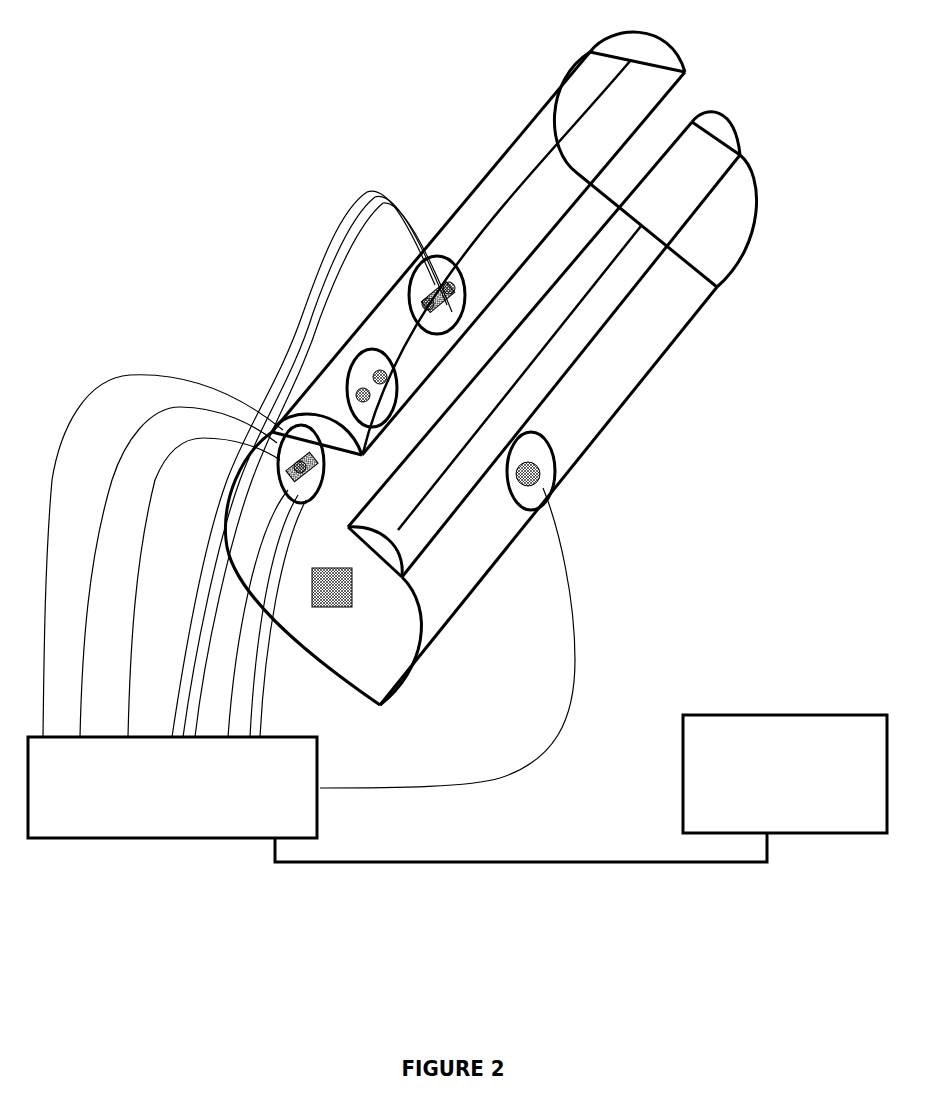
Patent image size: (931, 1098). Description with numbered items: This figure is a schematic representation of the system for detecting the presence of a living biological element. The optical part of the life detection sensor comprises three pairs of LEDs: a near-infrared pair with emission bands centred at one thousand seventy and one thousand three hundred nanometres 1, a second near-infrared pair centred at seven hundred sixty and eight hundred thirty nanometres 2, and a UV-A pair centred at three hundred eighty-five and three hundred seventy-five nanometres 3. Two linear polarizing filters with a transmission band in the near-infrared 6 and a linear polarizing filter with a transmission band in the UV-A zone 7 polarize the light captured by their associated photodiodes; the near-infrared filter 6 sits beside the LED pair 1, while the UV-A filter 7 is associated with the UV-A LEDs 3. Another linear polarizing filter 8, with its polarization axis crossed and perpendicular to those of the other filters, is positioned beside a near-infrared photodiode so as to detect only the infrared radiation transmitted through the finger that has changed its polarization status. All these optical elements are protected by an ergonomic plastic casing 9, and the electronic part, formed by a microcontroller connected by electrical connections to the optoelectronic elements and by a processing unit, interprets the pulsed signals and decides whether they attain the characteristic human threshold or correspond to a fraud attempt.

The pair of LEDs with emission bands centred at 1070 and 1300 nm 1 is at (441, 296).
The pair of LEDs with emission bands centred at 760 and 830 nm 2 is at (371, 378).
The pair of LEDs with emission bands centred at 385 and 375 nm 3 is at (304, 467).
The linear polarizing filter with transmission band in the near-infrared 6 is at (406, 334).
The linear polarizing filter with transmission band in the UV-A zone 7 is at (307, 464).
The linear polarizing filter with crossed polarization axis 8 is at (532, 463).
The ergonomic plastic casing 9 is at (512, 304).